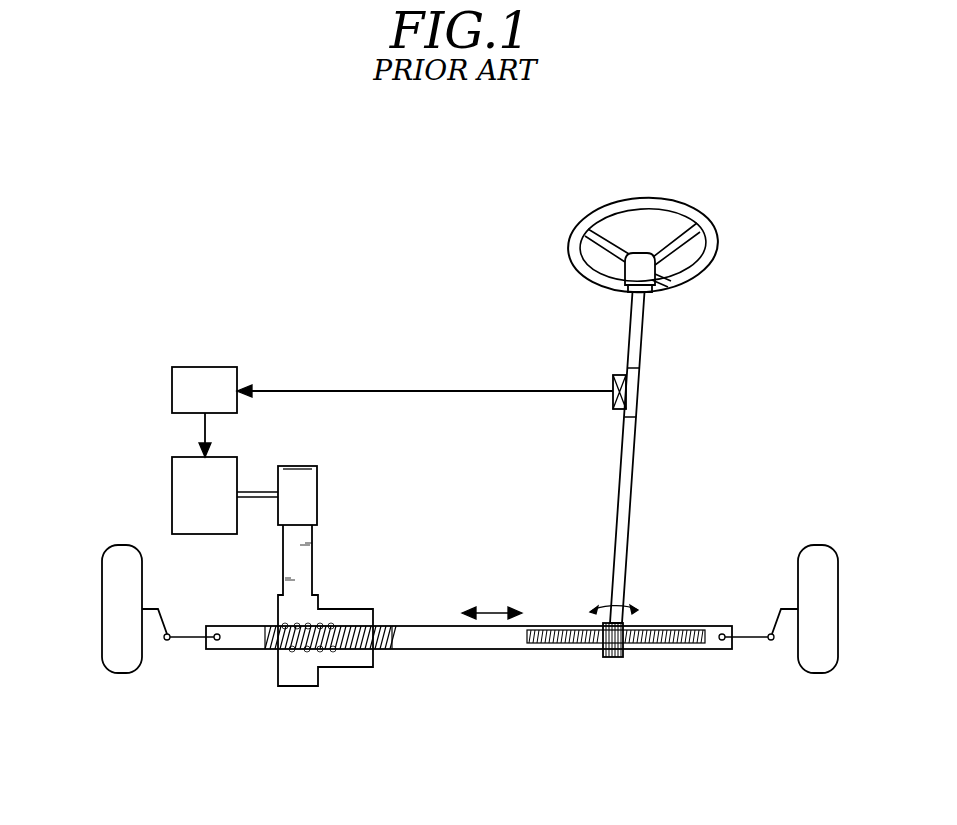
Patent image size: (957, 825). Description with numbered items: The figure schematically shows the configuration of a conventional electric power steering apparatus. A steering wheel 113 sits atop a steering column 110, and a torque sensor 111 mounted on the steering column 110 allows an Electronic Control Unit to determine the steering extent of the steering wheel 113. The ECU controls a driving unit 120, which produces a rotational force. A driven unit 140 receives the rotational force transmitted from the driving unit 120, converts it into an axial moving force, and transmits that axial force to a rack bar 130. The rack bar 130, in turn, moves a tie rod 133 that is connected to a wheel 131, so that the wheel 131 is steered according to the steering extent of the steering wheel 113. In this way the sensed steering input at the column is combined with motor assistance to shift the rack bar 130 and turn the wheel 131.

The steering column 110 is at (644, 409).
The torque sensor 111 is at (613, 377).
The steering wheel 113 is at (664, 208).
The driving unit 120 is at (162, 460).
The rack bar 130 is at (408, 630).
The wheel 131 is at (815, 553).
The tie rod 133 is at (755, 635).
The driven unit 140 is at (338, 680).